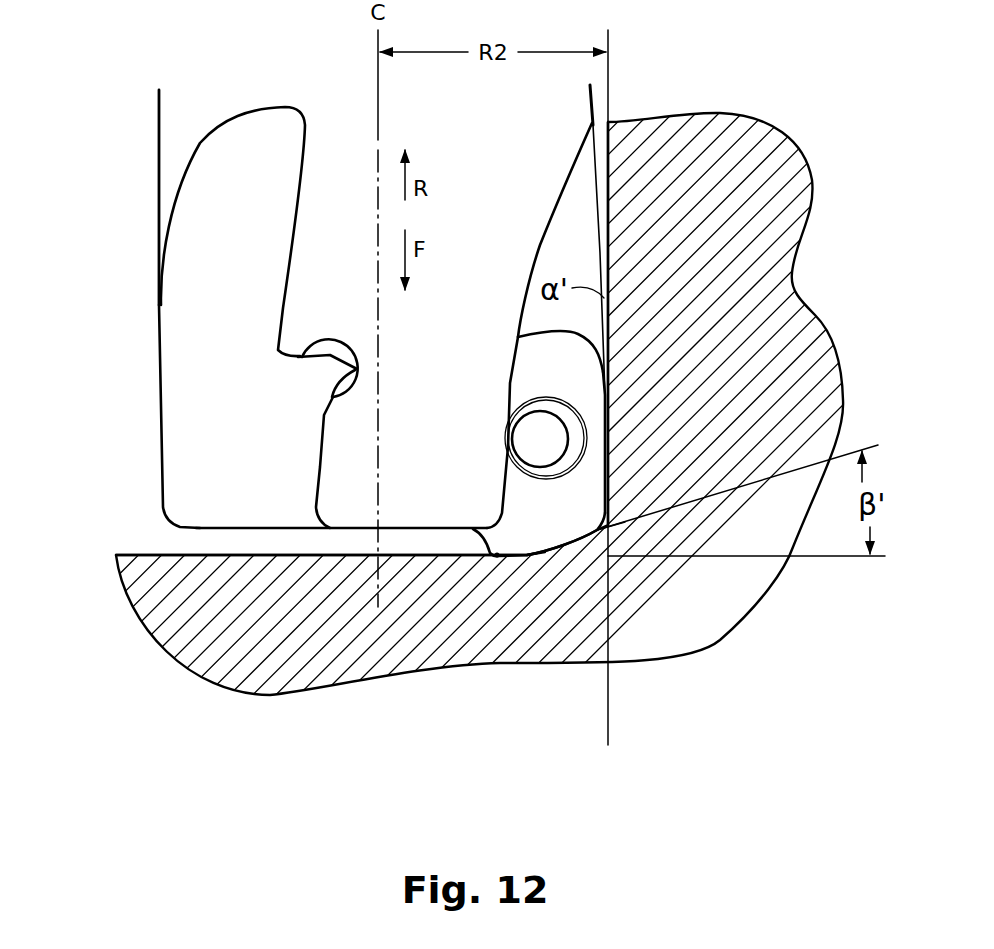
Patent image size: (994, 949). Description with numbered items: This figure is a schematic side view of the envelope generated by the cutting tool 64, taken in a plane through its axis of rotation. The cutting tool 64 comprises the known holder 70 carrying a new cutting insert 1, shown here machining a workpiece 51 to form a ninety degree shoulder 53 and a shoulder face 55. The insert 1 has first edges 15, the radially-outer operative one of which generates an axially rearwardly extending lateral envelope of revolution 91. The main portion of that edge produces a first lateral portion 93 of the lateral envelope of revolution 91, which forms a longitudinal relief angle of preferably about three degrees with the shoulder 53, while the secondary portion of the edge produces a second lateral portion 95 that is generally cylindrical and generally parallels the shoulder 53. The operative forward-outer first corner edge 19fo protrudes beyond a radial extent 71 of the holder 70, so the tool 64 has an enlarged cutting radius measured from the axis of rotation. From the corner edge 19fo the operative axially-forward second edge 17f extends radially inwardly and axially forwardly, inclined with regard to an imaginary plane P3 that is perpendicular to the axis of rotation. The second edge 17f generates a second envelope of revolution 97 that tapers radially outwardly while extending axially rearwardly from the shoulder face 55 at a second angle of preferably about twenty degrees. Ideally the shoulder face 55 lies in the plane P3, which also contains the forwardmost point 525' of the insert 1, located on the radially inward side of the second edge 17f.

The holder 70 is at (187, 121).
The cutting tool 64 is at (115, 304).
The shoulder face 55 is at (430, 555).
The imaginary plane P3 is at (148, 555).
The radial extent 71 is at (608, 108).
The workpiece 51 is at (713, 600).
The 90° shoulder 53 is at (608, 168).
The cutting insert 1 is at (558, 360).
The first edges 15 is at (585, 392).
The lateral envelope of revolution 91 is at (586, 426).
The first lateral portion 93 is at (603, 498).
The axially-forward second edge 17f is at (560, 550).
The forwardmost point 525' is at (439, 642).
The second envelope of revolution 97 is at (600, 537).
The forward-outer first corner edge 19fo is at (603, 556).
The second lateral portion 95 is at (608, 378).